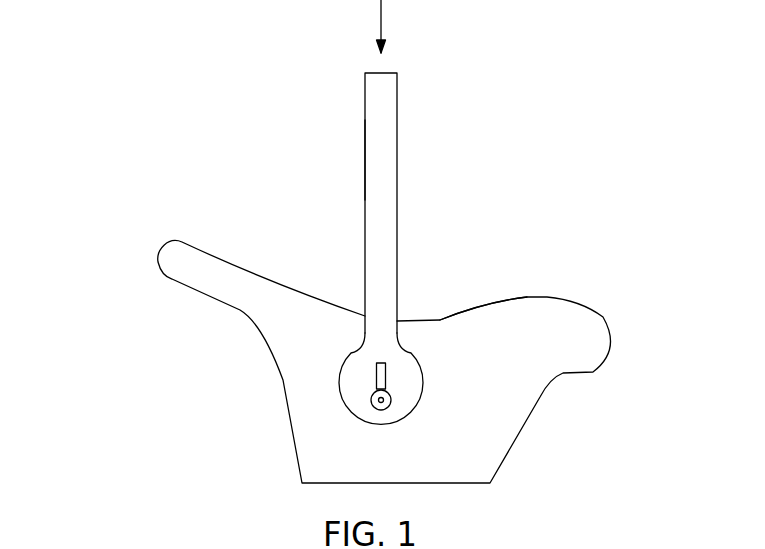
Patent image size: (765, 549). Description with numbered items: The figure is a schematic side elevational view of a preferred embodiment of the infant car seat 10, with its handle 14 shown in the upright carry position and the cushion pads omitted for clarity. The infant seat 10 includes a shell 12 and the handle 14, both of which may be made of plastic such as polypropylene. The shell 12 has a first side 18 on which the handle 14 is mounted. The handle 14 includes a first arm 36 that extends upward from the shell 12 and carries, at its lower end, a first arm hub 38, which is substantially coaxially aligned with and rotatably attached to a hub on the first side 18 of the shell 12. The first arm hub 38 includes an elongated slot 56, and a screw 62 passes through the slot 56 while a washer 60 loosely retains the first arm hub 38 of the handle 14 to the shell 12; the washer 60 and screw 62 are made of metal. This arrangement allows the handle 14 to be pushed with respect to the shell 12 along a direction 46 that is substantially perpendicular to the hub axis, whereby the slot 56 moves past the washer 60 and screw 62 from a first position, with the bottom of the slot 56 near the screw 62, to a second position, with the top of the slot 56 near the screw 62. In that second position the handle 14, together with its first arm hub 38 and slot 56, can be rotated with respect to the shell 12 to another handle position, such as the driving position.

The infant car seat 10 is at (167, 150).
The shell 12 is at (540, 413).
The handle 14 is at (407, 114).
The first side 18 is at (493, 307).
The first arm 36 is at (365, 150).
The first arm hub 38 is at (345, 377).
The direction 46 is at (382, 14).
The elongated slot 56 is at (385, 382).
The washer 60 is at (372, 407).
The screw 62 is at (388, 405).